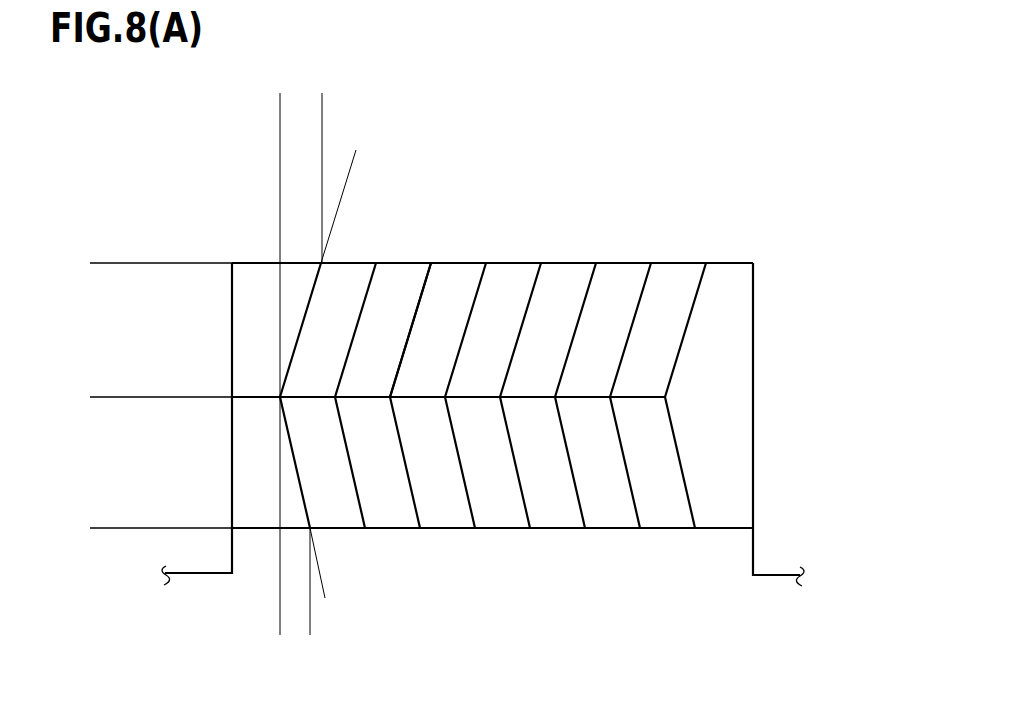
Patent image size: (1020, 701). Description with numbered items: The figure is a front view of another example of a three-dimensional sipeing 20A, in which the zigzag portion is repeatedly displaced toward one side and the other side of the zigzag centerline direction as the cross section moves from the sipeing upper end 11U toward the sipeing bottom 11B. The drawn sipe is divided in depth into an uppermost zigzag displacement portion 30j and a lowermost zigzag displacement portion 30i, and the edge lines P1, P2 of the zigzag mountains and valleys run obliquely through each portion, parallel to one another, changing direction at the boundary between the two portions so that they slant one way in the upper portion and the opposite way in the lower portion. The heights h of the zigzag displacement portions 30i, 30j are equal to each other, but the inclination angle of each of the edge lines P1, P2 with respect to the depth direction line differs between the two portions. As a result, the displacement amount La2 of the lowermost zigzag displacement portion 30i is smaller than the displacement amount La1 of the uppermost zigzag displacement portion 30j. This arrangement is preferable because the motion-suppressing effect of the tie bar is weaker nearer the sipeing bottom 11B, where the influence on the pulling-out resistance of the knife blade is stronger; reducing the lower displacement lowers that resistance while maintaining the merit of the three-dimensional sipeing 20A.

The three-dimensional sipeing 20A is at (646, 198).
The sipeing upper end 11U is at (568, 263).
The sipeing bottom 11B is at (628, 528).
The uppermost zigzag displacement portion 30j is at (225, 265).
The lowermost zigzag displacement portion 30i is at (225, 400).
The edge line P1 is at (305, 315).
The edge line P2 is at (357, 320).
The displacement amount of the uppermost zigzag displacement portion La1 is at (357, 119).
The displacement amount of the lowermost zigzag displacement portion La2 is at (345, 632).
The height of the zigzag displacement portion h is at (96, 263).